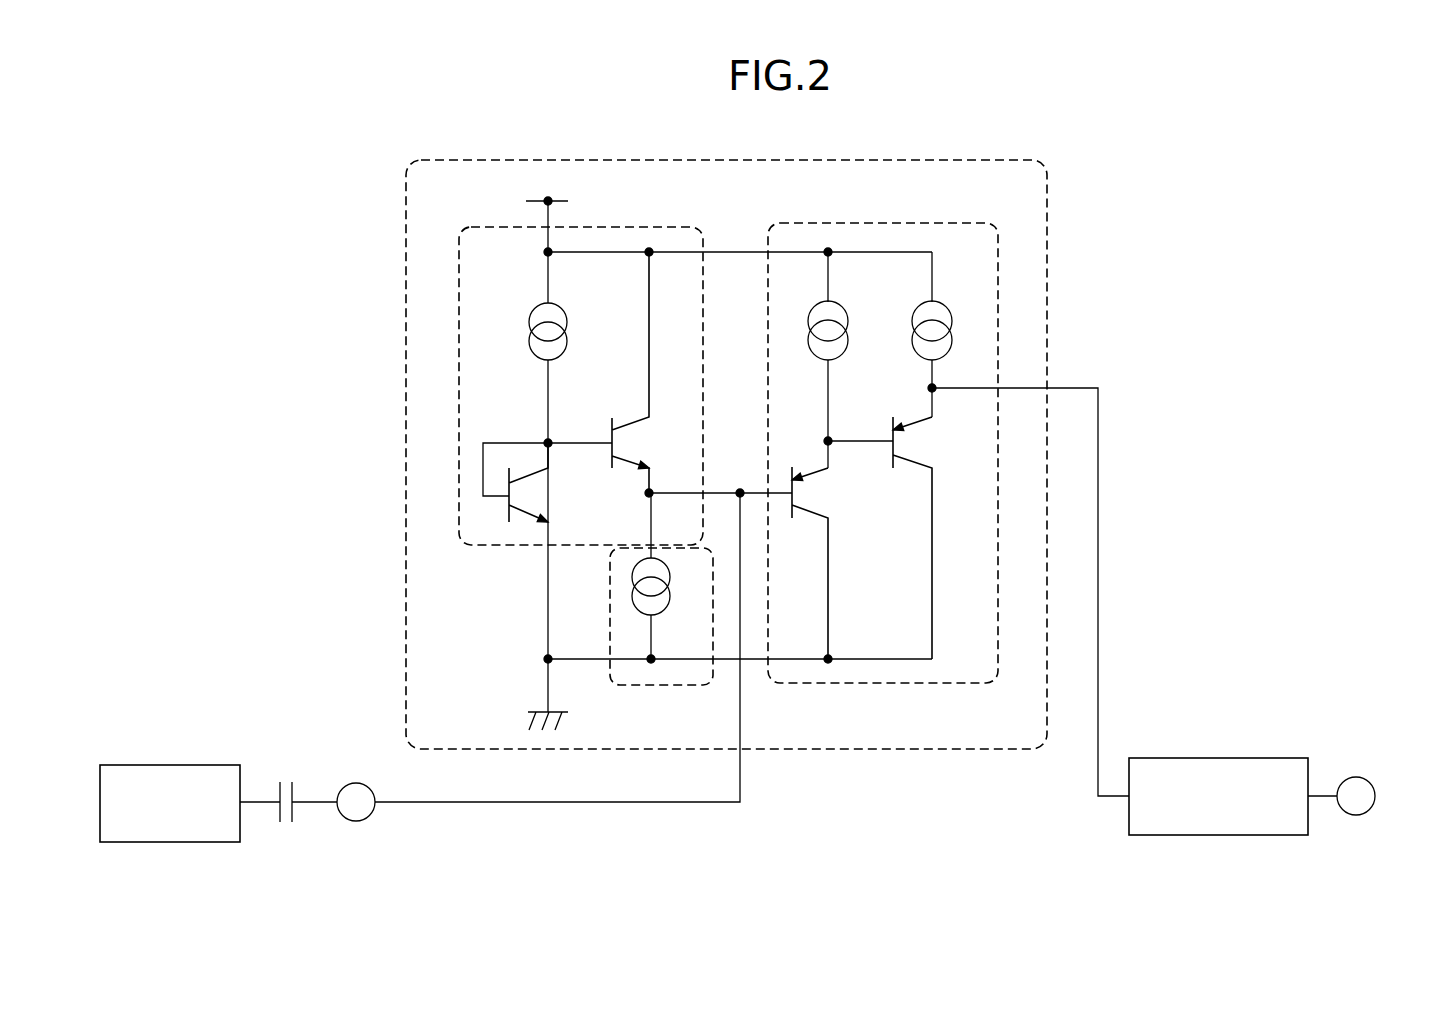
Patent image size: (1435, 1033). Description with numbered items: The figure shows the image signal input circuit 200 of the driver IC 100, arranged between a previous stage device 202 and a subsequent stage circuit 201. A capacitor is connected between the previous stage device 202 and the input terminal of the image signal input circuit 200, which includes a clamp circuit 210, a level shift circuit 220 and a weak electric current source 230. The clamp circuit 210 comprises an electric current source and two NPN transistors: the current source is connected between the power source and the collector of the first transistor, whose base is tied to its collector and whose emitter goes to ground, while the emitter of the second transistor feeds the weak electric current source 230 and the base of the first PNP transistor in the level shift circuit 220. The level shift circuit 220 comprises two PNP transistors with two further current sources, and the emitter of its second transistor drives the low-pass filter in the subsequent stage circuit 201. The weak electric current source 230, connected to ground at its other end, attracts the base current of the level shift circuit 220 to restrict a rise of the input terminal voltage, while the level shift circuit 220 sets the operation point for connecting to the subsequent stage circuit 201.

The driver IC 100 is at (1092, 124).
The image signal input circuit 200 is at (970, 159).
The clamp circuit 210 is at (623, 226).
The level shift circuit 220 is at (920, 223).
The weak electric current source 230 is at (673, 686).
The subsequent stage circuit 201 is at (1215, 759).
The previous stage device 202 is at (165, 766).